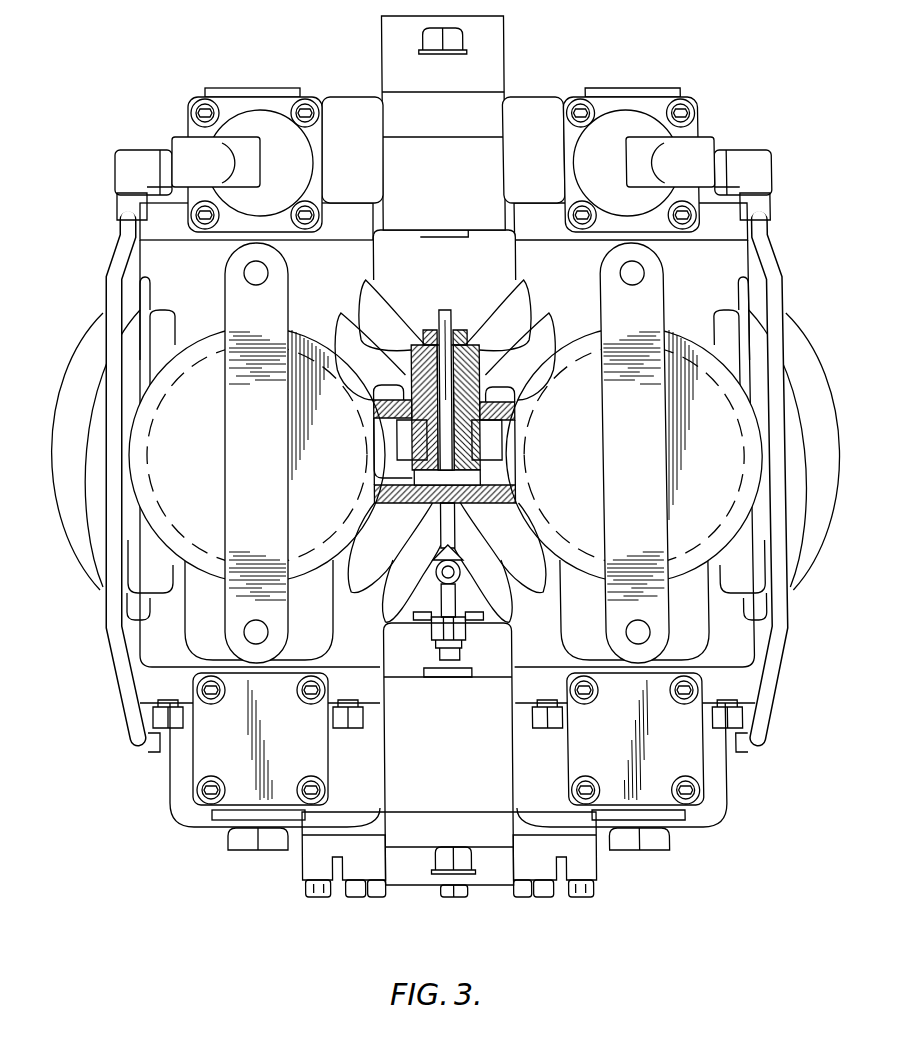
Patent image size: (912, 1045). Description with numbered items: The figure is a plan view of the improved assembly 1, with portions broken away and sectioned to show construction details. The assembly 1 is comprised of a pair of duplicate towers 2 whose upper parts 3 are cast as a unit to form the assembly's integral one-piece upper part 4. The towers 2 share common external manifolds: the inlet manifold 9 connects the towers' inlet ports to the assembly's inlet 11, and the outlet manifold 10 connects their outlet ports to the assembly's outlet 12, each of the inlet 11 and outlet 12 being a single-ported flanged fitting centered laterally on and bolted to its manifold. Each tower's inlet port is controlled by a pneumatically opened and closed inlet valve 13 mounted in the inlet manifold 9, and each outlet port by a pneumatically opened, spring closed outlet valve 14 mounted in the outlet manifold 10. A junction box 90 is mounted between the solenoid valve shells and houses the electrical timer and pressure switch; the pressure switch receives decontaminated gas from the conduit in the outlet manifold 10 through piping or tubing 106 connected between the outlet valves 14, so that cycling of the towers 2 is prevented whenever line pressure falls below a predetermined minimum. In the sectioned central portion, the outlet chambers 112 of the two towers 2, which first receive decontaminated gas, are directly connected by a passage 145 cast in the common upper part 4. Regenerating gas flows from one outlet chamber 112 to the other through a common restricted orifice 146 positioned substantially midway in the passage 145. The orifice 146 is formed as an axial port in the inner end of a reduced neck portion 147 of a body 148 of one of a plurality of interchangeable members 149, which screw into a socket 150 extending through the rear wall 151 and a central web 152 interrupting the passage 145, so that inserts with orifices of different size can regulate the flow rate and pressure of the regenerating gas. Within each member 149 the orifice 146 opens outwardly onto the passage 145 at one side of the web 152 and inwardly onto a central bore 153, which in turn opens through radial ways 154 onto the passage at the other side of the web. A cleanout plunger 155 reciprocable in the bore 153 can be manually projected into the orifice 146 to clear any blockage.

The improved assembly 1 is at (822, 549).
The towers 2 is at (70, 548).
The upper parts of the towers 3 is at (196, 286).
The one-piece upper part 4 is at (333, 298).
The inlet manifold 9 is at (537, 97).
The outlet manifold 10 is at (503, 668).
The inlet 11 is at (492, 15).
The outlet 12 is at (472, 886).
The inlet valve 13 is at (188, 123).
The outlet valve 14 is at (197, 768).
The junction box 90 is at (493, 620).
The piping or tubing 106 is at (441, 597).
The outlet chamber 112 is at (346, 466).
The passage 145 is at (372, 446).
The restricted orifice 146 is at (462, 503).
The reduced neck portion 147 is at (373, 470).
The body 148 is at (478, 362).
The interchangeable members or inserts 149 is at (408, 348).
The socket 150 is at (400, 418).
The rear wall 151 is at (372, 398).
The central web 152 is at (513, 418).
The central bore 153 is at (412, 383).
The radial ways 154 is at (456, 456).
The cleanout plunger 155 is at (470, 392).